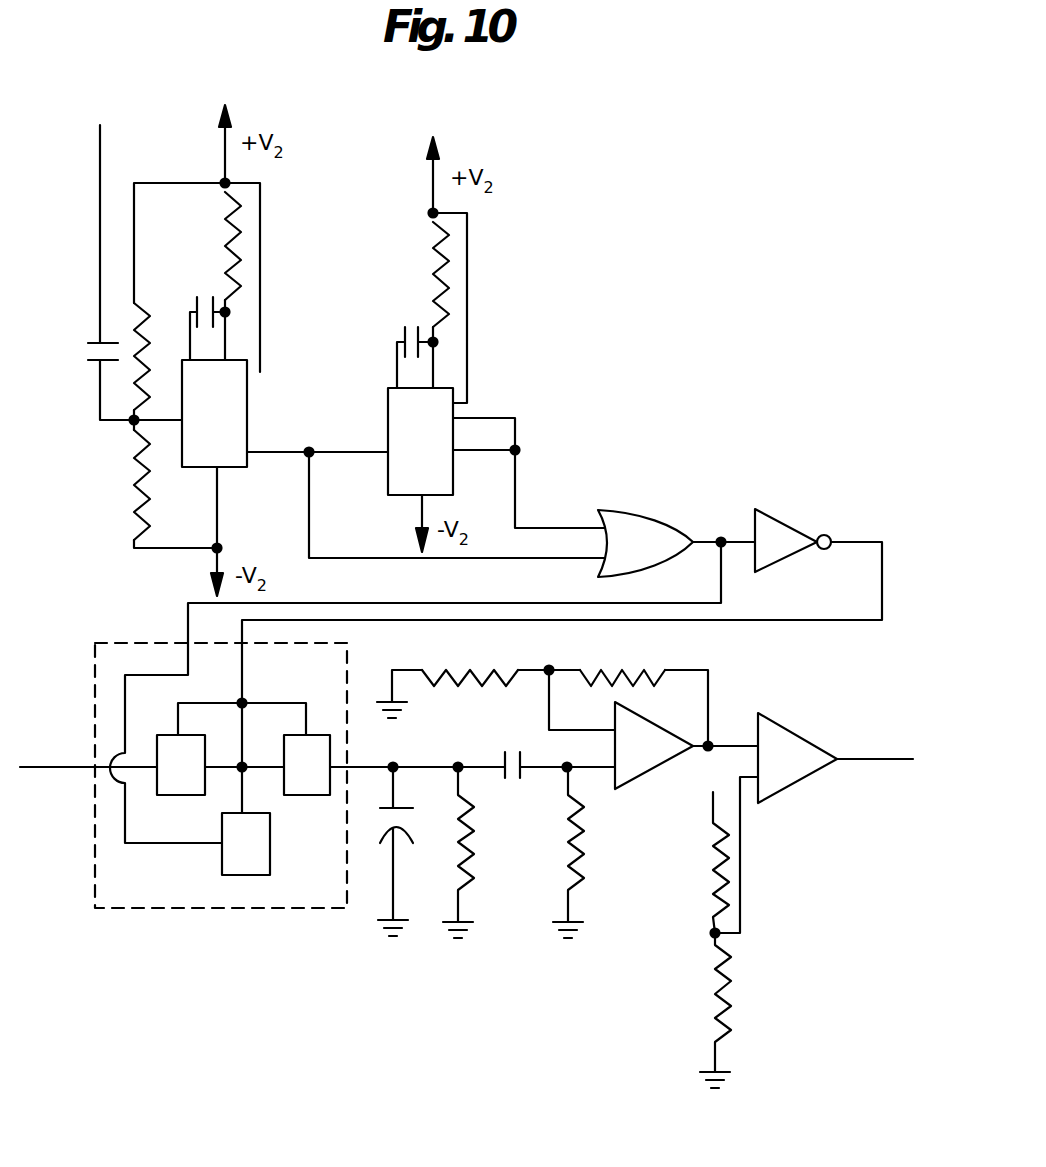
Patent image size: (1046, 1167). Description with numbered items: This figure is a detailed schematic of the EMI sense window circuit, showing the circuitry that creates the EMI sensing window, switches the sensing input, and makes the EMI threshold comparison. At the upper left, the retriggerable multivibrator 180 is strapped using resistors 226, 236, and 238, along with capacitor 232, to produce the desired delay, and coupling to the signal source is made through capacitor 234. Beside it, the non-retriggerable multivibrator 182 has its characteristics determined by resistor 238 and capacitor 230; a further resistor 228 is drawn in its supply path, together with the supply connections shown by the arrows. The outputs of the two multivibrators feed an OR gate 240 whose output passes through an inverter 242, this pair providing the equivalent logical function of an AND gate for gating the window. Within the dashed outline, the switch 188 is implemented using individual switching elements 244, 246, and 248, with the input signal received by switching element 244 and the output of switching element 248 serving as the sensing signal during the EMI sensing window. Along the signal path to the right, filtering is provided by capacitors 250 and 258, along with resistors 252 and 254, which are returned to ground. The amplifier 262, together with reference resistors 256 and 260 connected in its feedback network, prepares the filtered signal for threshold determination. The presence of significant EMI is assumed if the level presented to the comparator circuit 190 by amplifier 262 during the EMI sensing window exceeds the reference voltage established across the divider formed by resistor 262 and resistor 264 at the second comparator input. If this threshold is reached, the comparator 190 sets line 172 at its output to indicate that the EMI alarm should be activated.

The line 172 is at (885, 760).
The retriggerable multivibrator 180 is at (248, 392).
The non-retriggerable multivibrator 182 is at (388, 478).
The switch 188 is at (155, 642).
The comparator circuit 190 is at (785, 728).
The resistor 226 is at (237, 253).
The resistor 228 is at (437, 285).
The capacitor 230 is at (402, 340).
The capacitor 232 is at (212, 300).
The capacitor 234 is at (93, 340).
The resistor 236 is at (137, 383).
The resistor 238 is at (138, 490).
The OR gate 240 is at (640, 510).
The inverter 242 is at (785, 518).
The switching element 244 is at (172, 796).
The switching element 246 is at (240, 876).
The switching element 248 is at (290, 797).
The capacitor 250 is at (393, 852).
The resistor 252 is at (462, 825).
The resistor 254 is at (572, 830).
The reference resistor 256 is at (500, 686).
The capacitor 258 is at (502, 757).
The reference resistor 260 is at (665, 660).
The amplifier 262 is at (680, 762).
The resistor 264 is at (715, 1003).